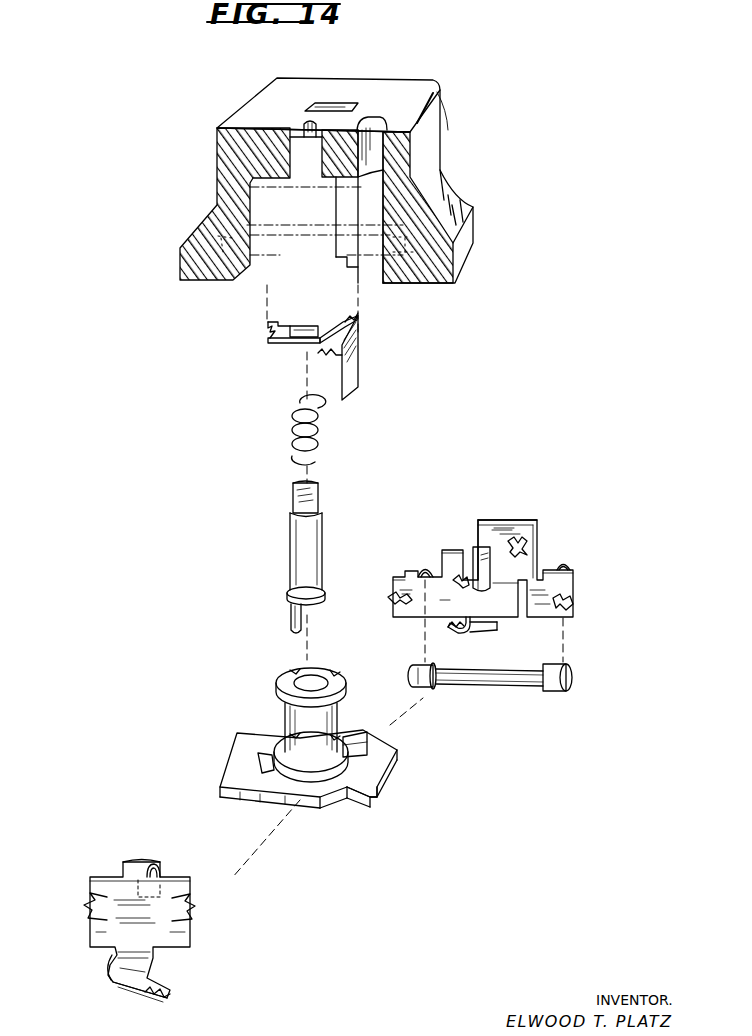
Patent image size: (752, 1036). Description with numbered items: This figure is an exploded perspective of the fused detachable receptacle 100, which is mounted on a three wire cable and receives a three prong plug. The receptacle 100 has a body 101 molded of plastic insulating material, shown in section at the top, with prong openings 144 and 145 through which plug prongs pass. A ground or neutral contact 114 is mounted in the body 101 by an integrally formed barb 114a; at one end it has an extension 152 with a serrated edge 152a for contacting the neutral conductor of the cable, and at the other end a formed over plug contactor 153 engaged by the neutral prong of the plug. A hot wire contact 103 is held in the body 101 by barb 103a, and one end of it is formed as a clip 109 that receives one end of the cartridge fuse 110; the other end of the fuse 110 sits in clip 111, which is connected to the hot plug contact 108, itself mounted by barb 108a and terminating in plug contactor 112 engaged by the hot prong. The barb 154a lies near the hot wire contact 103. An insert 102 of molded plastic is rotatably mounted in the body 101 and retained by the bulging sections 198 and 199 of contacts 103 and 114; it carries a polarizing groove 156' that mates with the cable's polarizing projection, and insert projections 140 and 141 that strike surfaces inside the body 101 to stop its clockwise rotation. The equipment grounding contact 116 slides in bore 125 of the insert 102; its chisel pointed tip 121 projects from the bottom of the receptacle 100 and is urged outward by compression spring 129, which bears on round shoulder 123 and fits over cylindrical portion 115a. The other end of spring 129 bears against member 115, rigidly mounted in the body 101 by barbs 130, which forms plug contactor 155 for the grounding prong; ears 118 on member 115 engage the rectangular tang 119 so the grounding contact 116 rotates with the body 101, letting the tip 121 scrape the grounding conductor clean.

The fused detachable receptacle 100 is at (565, 330).
The body 101 is at (248, 100).
The insert 102 is at (328, 731).
The hot wire contact 103 is at (491, 576).
The barb 103a is at (393, 599).
The hot plug contact 108 is at (508, 520).
The barb 108a is at (547, 541).
The clip 109 is at (425, 570).
The cartridge fuse 110 is at (484, 690).
The clip 111 is at (566, 566).
The plug contactor 112 is at (478, 552).
The ground or neutral contact 114 is at (141, 934).
The barb 114a is at (88, 897).
The member 115 is at (370, 360).
The cylindrical portion 115a is at (312, 553).
The equipment grounding contact 116 is at (305, 557).
The ears 118 is at (306, 326).
The rectangular tang 119 is at (320, 496).
The chisel pointed tip 121 is at (291, 617).
The round shoulder 123 is at (320, 590).
The bore 125 is at (311, 680).
The compression spring 129 is at (320, 434).
The barbs 130 is at (270, 330).
The insert projection 140 is at (264, 765).
The insert projection 141 is at (355, 736).
The prong opening 144 is at (332, 103).
The prong opening 145 is at (174, 205).
The extension 152 is at (116, 984).
The serrated edge 152a is at (155, 1000).
The plug contactor 153 is at (156, 870).
The barb 154a is at (460, 636).
The plug contactor 155 is at (375, 125).
The polarizing groove 156' is at (391, 783).
The bulging section 198 is at (499, 630).
The bulging section 199 is at (108, 970).